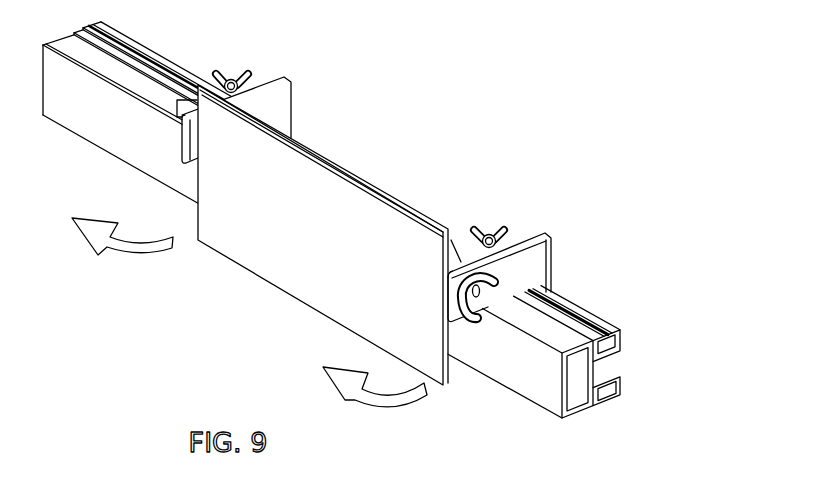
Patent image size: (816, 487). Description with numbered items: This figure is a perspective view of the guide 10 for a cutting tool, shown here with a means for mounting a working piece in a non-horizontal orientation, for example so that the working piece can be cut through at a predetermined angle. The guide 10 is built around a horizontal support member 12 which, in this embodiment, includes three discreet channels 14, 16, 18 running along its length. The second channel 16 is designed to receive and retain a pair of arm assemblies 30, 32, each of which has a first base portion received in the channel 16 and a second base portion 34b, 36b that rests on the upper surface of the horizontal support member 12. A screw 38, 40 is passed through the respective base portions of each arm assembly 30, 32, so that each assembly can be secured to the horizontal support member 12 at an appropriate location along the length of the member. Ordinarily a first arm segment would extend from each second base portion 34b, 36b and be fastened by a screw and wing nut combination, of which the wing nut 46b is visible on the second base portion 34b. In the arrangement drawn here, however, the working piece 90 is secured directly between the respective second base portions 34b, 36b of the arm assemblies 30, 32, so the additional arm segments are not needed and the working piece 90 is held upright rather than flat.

The guide 10 is at (477, 182).
The horizontal support member 12 is at (593, 403).
The channel 14 is at (617, 395).
The second channel 16 is at (622, 358).
The channel 18 is at (576, 398).
The arm assembly 30 is at (600, 263).
The arm assembly 32 is at (268, 58).
The second base portion 34b is at (537, 260).
The second base portion 36b is at (291, 102).
The screw 38 is at (503, 228).
The screw 40 is at (216, 73).
The wing nut 46b is at (473, 315).
The working piece 90 is at (444, 386).